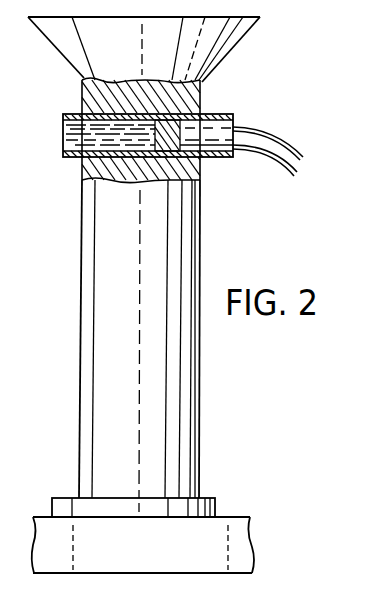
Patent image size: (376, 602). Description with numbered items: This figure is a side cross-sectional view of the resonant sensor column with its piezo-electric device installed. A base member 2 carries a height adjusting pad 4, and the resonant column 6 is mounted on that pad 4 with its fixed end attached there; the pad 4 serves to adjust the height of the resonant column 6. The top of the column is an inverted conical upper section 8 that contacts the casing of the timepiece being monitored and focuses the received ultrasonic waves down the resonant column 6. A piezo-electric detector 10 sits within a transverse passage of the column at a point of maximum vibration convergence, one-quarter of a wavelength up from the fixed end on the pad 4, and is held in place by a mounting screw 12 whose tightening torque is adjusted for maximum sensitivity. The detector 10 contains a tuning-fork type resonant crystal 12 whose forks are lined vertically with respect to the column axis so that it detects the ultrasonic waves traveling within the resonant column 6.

The base member 2 is at (250, 553).
The height adjusting pad 4 is at (215, 510).
The resonant column 6 is at (200, 228).
The conical upper section 8 is at (237, 38).
The piezo-electric detector 10 is at (210, 113).
The mounting screw 12 is at (217, 158).